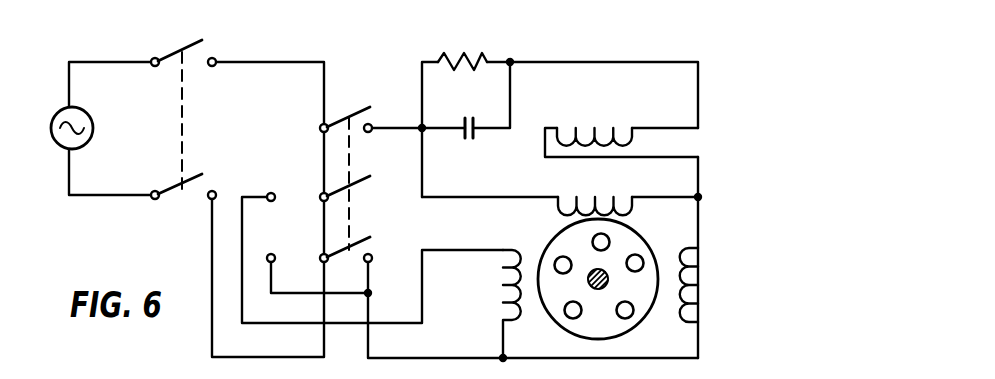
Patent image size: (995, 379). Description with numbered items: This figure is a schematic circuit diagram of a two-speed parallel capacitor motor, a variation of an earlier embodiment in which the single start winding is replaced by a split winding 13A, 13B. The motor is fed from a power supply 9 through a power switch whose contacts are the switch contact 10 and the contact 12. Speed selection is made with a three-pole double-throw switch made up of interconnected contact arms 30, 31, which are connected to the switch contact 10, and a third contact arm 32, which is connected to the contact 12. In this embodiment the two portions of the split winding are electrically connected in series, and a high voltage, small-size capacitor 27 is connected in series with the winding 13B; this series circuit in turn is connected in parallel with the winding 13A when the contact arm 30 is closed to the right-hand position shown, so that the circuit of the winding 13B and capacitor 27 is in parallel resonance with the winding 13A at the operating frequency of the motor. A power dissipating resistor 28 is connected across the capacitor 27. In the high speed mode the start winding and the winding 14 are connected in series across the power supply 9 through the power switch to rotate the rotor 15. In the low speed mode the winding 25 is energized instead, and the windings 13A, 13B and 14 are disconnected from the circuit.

The power supply 9 is at (56, 110).
The switch contact 10 is at (172, 38).
The switch contact 12 is at (172, 201).
The winding 13A is at (600, 201).
The winding 13B is at (600, 131).
The winding 14 is at (695, 284).
The rotor 15 is at (643, 318).
The winding 25 is at (506, 296).
The capacitor 27 is at (477, 136).
The power dissipating resistor 28 is at (462, 55).
The contact arm 30 is at (357, 110).
The contact arm 31 is at (362, 178).
The contact arm 32 is at (360, 241).